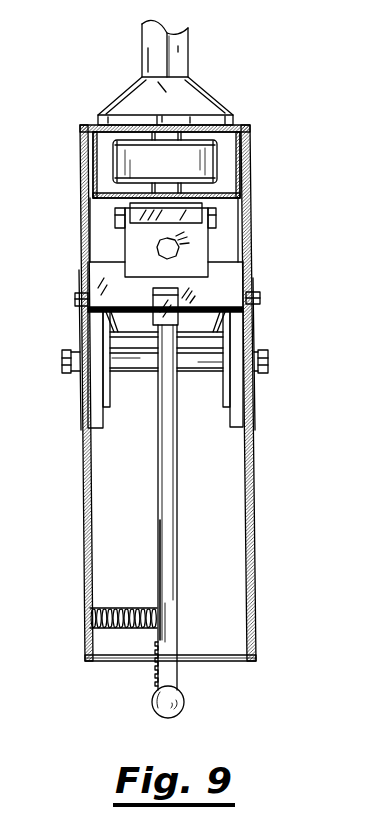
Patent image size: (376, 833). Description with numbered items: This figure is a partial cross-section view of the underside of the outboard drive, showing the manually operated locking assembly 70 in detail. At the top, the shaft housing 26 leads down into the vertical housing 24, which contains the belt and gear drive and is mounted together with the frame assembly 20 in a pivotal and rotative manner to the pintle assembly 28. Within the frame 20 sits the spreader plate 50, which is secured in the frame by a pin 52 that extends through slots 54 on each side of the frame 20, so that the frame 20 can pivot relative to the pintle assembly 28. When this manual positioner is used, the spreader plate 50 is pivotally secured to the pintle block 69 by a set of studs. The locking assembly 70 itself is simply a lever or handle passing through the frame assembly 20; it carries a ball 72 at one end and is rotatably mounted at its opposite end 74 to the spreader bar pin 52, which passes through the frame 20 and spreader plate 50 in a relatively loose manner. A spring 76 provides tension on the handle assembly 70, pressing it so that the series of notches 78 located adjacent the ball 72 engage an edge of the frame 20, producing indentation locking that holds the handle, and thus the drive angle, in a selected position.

The frame assembly 20 is at (259, 556).
The vertical housing 24 is at (242, 128).
The shaft housing 26 is at (177, 48).
The pintle assembly 28 is at (116, 390).
The spreader plate 50 is at (107, 276).
The pin 52 is at (78, 293).
The slots 54 is at (88, 327).
The pintle block 69 is at (198, 252).
The manual operated locking assembly 70 is at (188, 522).
The ball 72 is at (183, 708).
The opposite end 74 is at (173, 313).
The spring 76 is at (107, 606).
The notches 78 is at (157, 668).